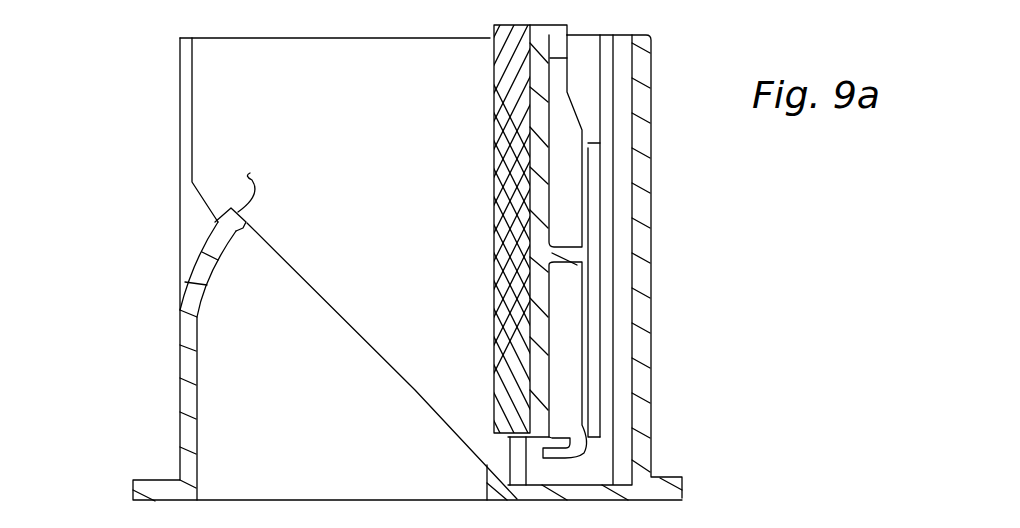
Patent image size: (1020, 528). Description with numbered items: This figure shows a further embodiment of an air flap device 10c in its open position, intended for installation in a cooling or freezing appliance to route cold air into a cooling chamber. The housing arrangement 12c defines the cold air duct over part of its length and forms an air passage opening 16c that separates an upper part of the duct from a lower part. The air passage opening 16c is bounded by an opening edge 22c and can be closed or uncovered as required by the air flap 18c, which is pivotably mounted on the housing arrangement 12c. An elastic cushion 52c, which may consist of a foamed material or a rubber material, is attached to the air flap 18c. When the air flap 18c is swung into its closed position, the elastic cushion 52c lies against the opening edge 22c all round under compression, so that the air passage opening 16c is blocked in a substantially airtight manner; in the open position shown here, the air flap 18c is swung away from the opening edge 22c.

The air flap device 10c is at (140, 90).
The housing arrangement 12c is at (652, 208).
The air passage opening 16c is at (330, 362).
The air flap 18c is at (551, 345).
The opening edge 22c is at (250, 173).
The elastic cushion 52c is at (490, 246).